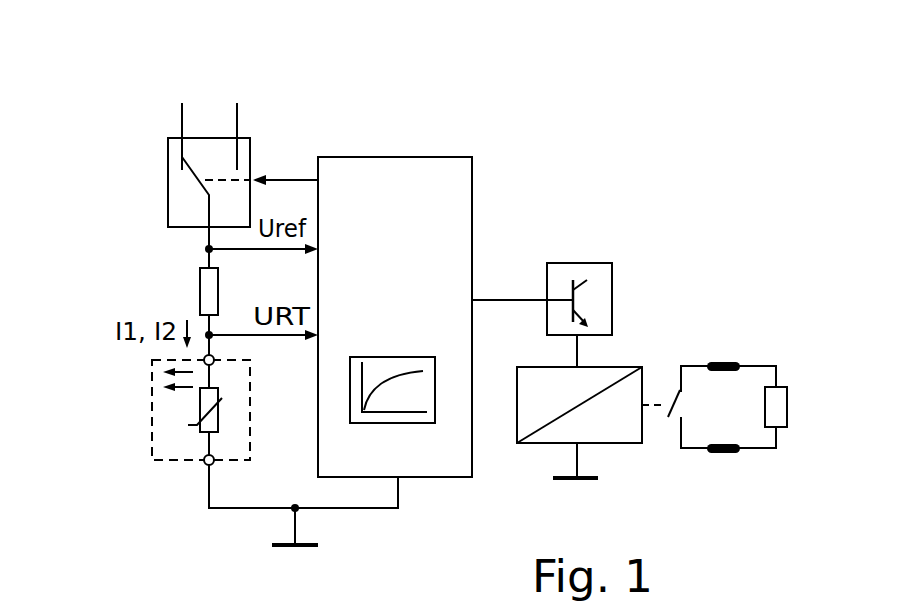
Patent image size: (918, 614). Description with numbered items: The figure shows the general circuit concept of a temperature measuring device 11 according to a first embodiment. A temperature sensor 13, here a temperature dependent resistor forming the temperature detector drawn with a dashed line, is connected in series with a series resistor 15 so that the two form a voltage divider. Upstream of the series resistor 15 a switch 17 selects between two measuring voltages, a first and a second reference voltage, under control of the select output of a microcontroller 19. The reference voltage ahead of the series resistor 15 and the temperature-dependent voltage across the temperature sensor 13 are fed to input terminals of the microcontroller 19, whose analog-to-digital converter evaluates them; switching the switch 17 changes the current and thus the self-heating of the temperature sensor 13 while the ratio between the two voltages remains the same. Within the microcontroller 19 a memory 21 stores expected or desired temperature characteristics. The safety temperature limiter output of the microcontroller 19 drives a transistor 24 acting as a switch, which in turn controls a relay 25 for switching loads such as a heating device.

The temperature measuring device 11 is at (387, 84).
The temperature sensor 13 is at (152, 422).
The series resistor 15 is at (118, 297).
The switch 17 is at (125, 207).
The microcontroller 19 is at (395, 319).
The memory 21 is at (420, 425).
The transistor 24 is at (582, 263).
The relay 25 is at (615, 373).